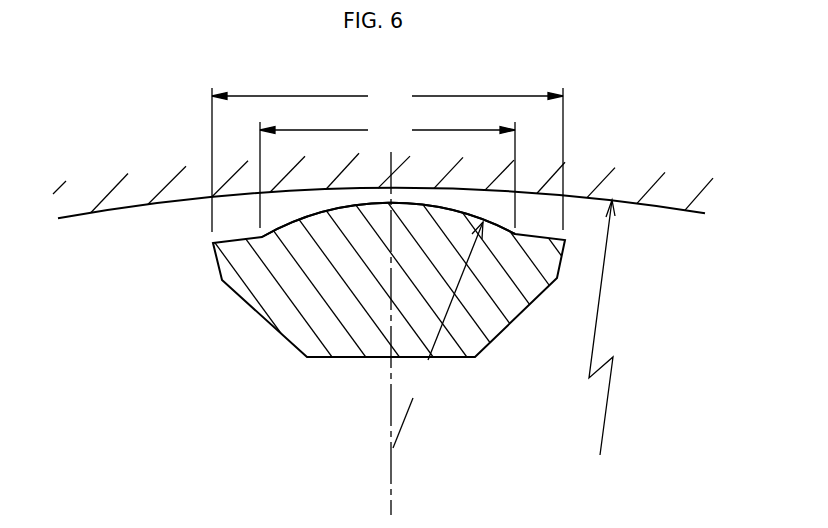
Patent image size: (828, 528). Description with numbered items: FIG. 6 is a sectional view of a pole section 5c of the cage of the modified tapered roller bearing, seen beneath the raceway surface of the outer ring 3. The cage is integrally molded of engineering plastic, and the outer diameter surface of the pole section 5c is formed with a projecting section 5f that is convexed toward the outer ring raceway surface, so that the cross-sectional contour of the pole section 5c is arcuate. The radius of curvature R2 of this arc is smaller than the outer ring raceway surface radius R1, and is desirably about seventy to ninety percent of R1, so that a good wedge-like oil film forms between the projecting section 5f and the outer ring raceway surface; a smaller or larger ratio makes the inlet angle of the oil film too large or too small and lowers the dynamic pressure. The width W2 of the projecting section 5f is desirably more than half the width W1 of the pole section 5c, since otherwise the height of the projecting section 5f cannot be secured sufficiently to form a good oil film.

The outer ring 3 is at (672, 193).
The pole section 5c is at (350, 357).
The projecting section 5f is at (313, 213).
The width of the pole section W1 is at (387, 158).
The width of the projecting section W2 is at (387, 173).
The outer ring raceway surface radius R1 is at (601, 344).
The radius of curvature of the projecting section R2 is at (438, 335).